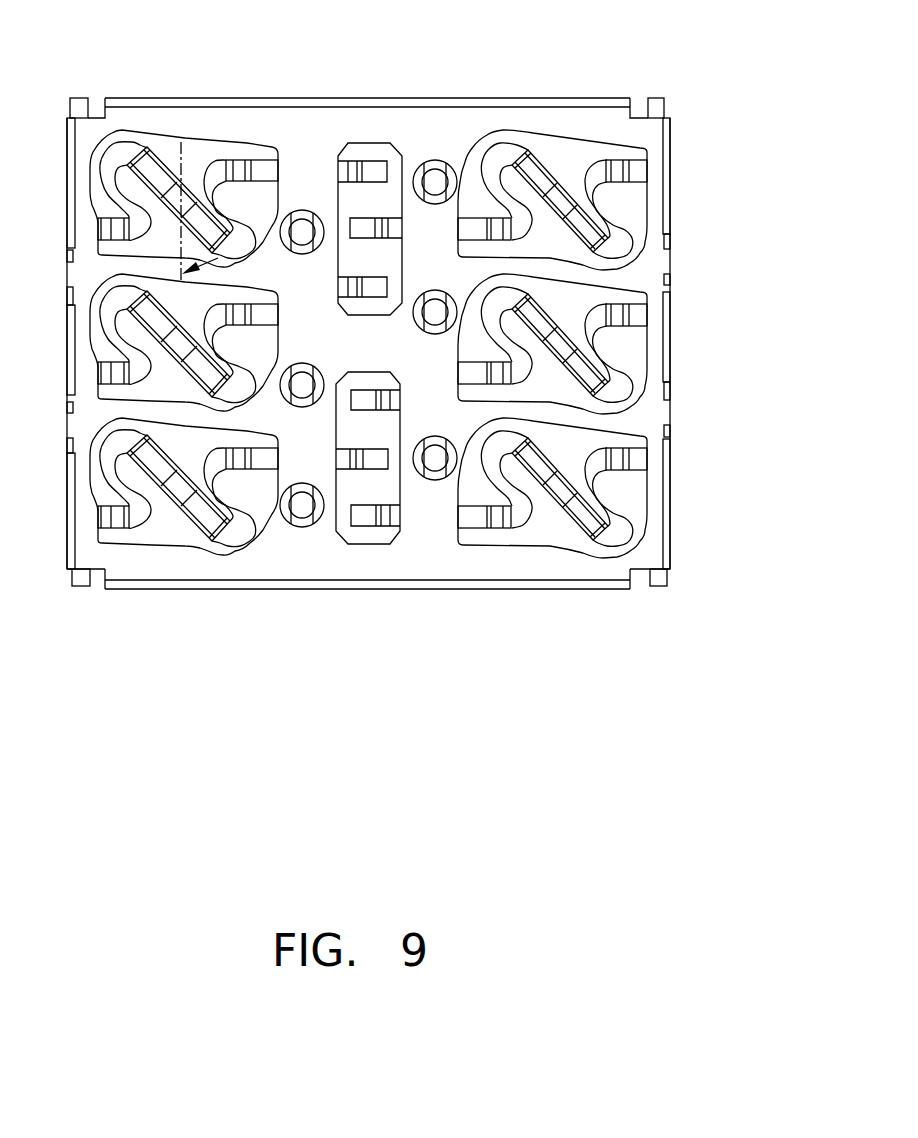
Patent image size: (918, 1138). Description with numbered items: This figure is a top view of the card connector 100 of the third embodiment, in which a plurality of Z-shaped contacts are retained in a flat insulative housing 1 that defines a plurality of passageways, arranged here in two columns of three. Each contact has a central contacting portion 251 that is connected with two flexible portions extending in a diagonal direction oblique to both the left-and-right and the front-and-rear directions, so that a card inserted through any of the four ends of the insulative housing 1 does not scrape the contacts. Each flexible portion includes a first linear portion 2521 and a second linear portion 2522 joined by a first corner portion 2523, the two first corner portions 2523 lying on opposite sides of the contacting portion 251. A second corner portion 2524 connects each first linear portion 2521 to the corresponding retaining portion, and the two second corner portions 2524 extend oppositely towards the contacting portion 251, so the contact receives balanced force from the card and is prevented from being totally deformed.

The card connector 100 is at (352, 58).
The insulative housing 1 is at (435, 133).
The contacting portion 251 is at (178, 483).
The first linear portion 2521 is at (245, 500).
The second linear portion 2522 is at (206, 518).
The first corner portion 2523 is at (563, 500).
The second corner portion 2524 is at (520, 508).